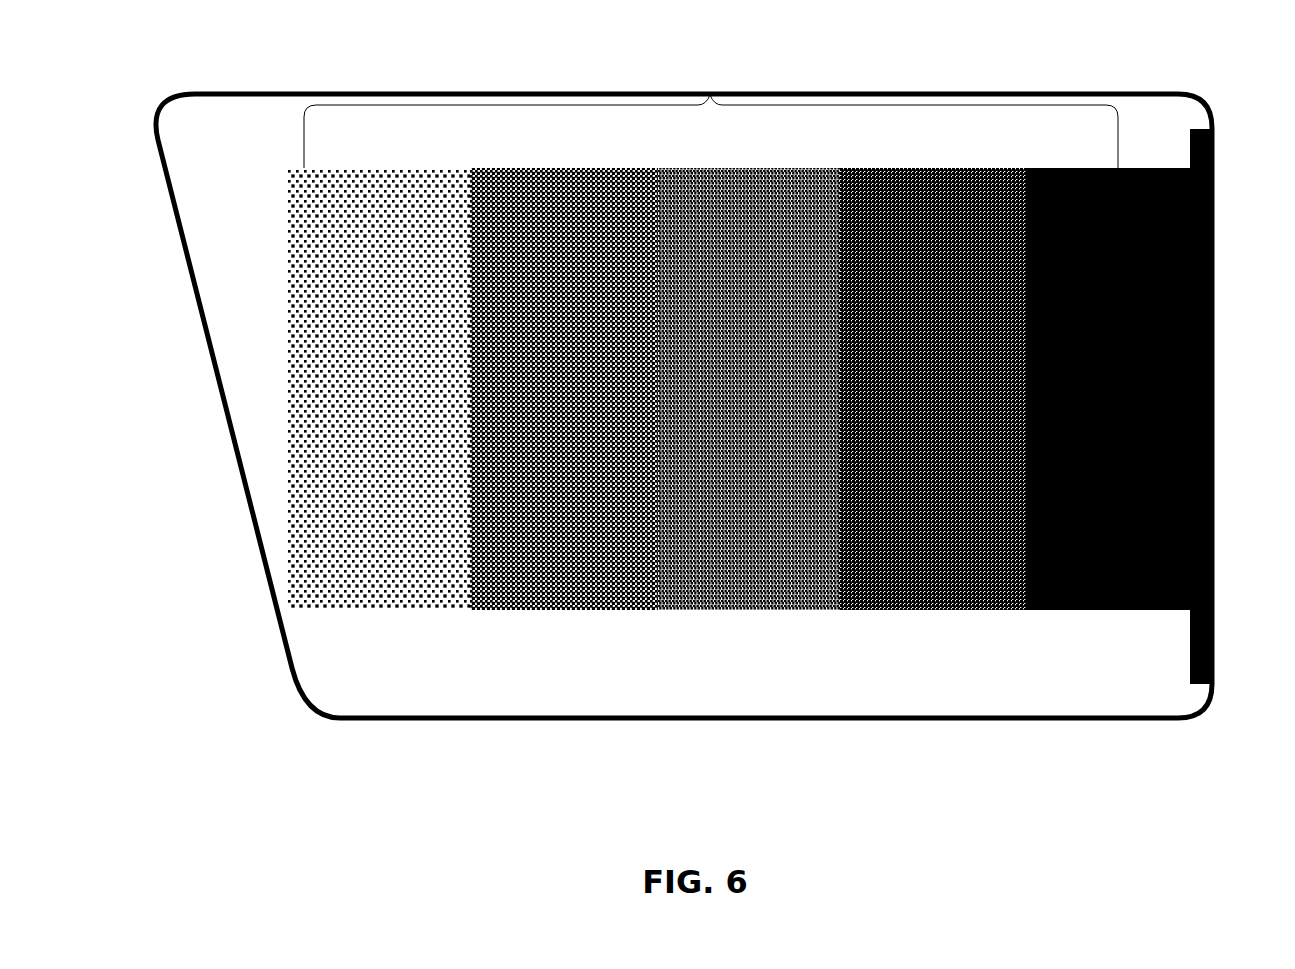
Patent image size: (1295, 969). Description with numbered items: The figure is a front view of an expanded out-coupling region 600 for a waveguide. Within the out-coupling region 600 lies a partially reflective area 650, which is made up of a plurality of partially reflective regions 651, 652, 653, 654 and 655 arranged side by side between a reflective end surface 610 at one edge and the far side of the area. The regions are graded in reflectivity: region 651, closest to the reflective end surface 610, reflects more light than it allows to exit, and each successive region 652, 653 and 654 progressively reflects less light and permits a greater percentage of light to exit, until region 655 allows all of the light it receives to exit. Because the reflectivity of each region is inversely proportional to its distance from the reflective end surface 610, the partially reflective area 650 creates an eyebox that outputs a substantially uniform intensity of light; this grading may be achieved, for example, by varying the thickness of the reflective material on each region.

The out-coupling region 600 is at (234, 714).
The reflective end surface 610 is at (1212, 418).
The partially reflective area 650 is at (739, 376).
The partially reflective region 651 is at (1080, 572).
The partially reflective region 652 is at (861, 572).
The partially reflective region 653 is at (712, 572).
The partially reflective region 654 is at (511, 572).
The partially reflective region 655 is at (363, 572).